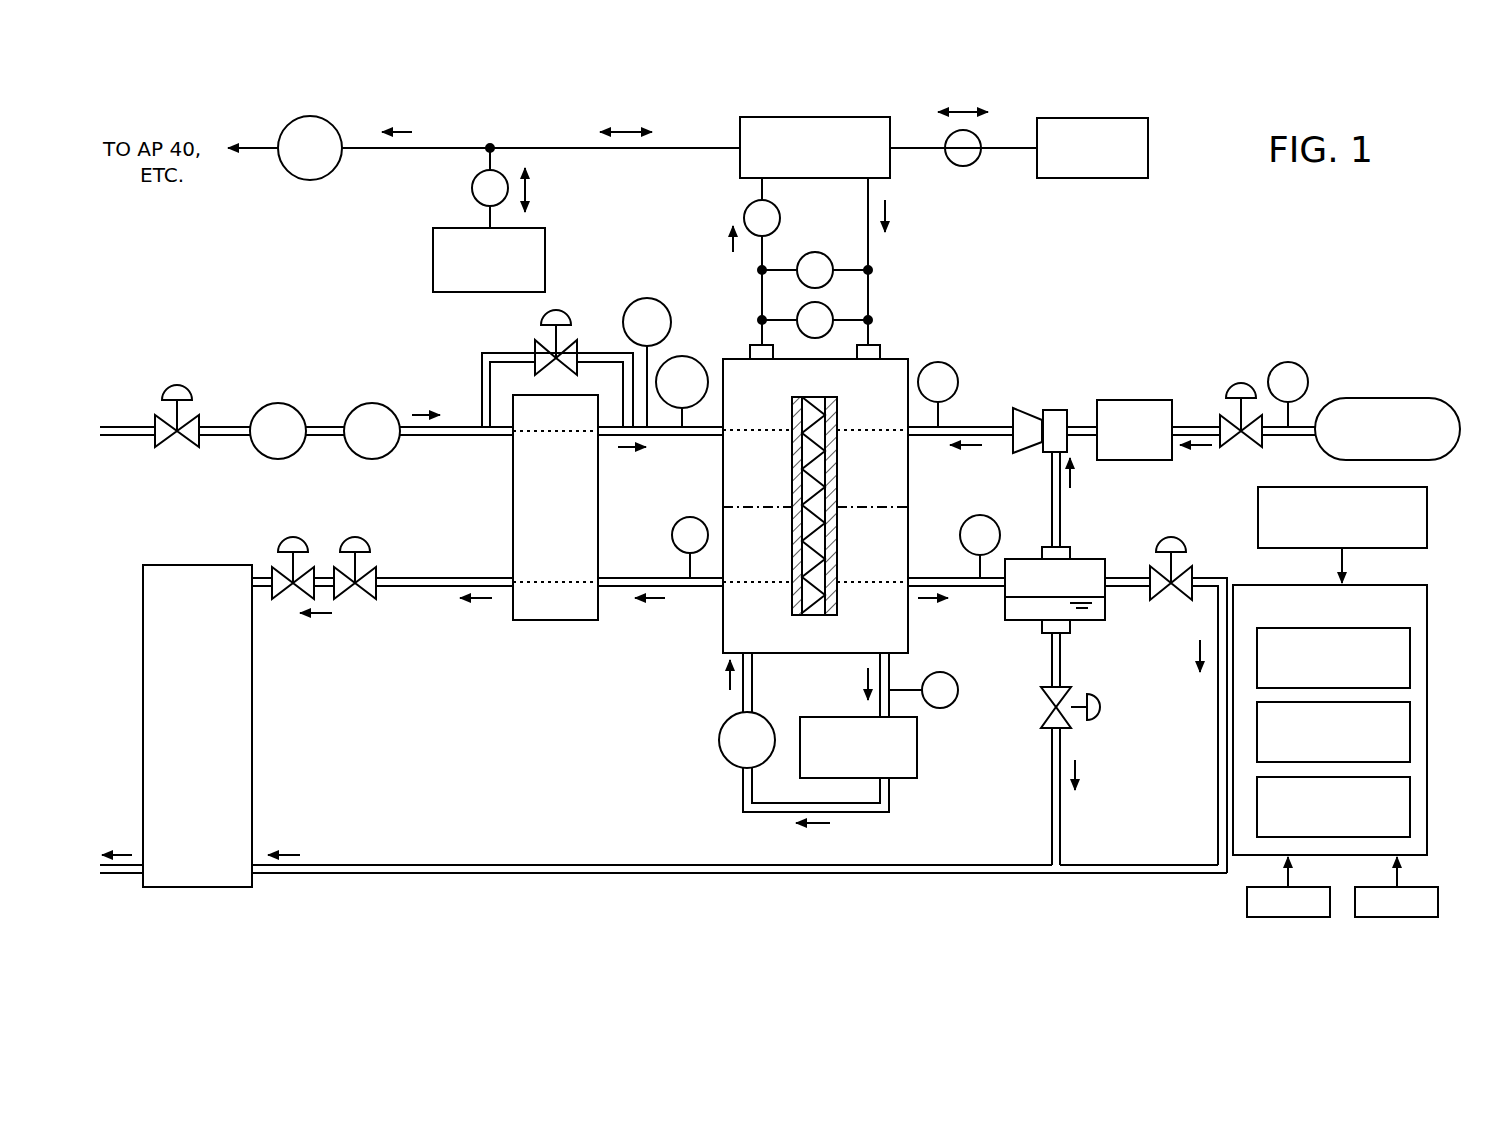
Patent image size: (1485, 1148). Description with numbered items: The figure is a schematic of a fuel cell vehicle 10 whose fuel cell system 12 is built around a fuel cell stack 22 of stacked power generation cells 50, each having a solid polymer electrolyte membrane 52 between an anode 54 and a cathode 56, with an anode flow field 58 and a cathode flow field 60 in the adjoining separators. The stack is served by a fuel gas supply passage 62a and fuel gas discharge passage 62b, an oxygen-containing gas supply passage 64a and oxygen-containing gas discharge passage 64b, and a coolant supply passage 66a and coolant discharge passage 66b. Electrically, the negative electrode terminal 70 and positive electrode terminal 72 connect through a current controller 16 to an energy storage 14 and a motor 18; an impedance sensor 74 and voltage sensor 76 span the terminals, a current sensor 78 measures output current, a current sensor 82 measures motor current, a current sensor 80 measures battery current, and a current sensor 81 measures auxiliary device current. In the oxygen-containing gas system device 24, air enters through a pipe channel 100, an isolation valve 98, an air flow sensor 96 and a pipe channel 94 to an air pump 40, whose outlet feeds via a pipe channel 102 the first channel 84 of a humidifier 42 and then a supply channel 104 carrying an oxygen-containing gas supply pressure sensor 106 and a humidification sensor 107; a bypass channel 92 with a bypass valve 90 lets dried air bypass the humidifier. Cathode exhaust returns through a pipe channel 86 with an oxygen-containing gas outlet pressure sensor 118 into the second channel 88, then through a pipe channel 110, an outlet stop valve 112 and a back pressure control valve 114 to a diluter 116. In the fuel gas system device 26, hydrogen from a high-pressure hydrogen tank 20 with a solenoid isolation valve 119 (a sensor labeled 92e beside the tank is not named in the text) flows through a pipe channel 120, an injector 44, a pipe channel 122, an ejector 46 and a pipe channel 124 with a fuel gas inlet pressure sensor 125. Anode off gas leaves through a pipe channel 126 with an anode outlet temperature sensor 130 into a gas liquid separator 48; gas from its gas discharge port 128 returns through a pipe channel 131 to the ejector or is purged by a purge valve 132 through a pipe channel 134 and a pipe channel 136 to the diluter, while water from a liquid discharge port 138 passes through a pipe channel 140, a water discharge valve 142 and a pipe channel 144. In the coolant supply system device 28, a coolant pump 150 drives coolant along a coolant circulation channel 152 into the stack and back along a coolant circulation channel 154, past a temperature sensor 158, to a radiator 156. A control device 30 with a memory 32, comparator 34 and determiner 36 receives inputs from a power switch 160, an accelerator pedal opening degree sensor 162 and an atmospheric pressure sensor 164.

The fuel cell vehicle 10 is at (237, 267).
The fuel cell system 12 is at (1216, 268).
The energy storage 14 is at (433, 252).
The current controller 16 is at (816, 117).
The motor 18 is at (1110, 118).
The high-pressure hydrogen tank 20 is at (1376, 398).
The fuel cell stack 22 is at (723, 497).
The oxygen-containing gas system device 24 is at (318, 336).
The fuel gas system device 26 is at (1325, 342).
The coolant supply system device 28 is at (692, 797).
The control device 30 is at (1288, 584).
The memory 32 is at (1412, 659).
The comparator 34 is at (1412, 733).
The determiner 36 is at (1412, 808).
The air pump 40 is at (373, 403).
The humidifier 42 is at (513, 512).
The injector 44 is at (1134, 400).
The ejector 46 is at (1025, 408).
The gas liquid separator 48 is at (1025, 621).
The power generation cell 50 is at (788, 396).
The solid polymer electrolyte membrane 52 is at (813, 492).
The anode 54 is at (833, 413).
The cathode 56 is at (798, 533).
The anode flow field 58 is at (839, 453).
The cathode flow field 60 is at (792, 455).
The fuel gas supply passage 62a is at (912, 438).
The fuel gas discharge passage 62b is at (907, 580).
The oxygen-containing gas supply passage 64a is at (723, 437).
The oxygen-containing gas discharge passage 64b is at (720, 589).
The coolant supply passage 66a is at (753, 655).
The coolant discharge passage 66b is at (893, 658).
The negative electrode terminal 70 is at (880, 346).
The positive electrode terminal 72 is at (750, 346).
The impedance sensor 74 is at (833, 317).
The voltage sensor 76 is at (826, 253).
The current sensor 78 is at (744, 218).
The current sensor 80 is at (471, 188).
The current sensor 81 is at (312, 181).
The current sensor 82 is at (966, 166).
The first channel 84 is at (531, 432).
The pipe channel 86 is at (628, 590).
The second channel 88 is at (530, 580).
The bypass valve 90 is at (542, 321).
The bypass channel 92 is at (482, 350).
The tank pressure sensor 92e is at (1288, 362).
The pipe channel 94 is at (333, 438).
The air flow sensor 96 is at (280, 403).
The isolation valve 98 is at (177, 385).
The pipe channel 100 is at (125, 437).
The pipe channel 102 is at (418, 438).
The supply channel 104 is at (632, 438).
The oxygen-containing gas supply pressure sensor 106 is at (684, 356).
The humidification sensor 107 is at (630, 305).
The pipe channel 110 is at (431, 590).
The outlet stop valve 112 is at (350, 537).
The back pressure control valve 114 is at (284, 537).
The diluter 116 is at (253, 726).
The oxygen-containing gas outlet pressure sensor 118 is at (674, 524).
The solenoid isolation valve 119 is at (1234, 383).
The pipe channel 120 is at (1200, 427).
The pipe channel 122 is at (1078, 427).
The pipe channel 124 is at (985, 427).
The fuel gas inlet pressure sensor 125 is at (942, 362).
The pipe channel 126 is at (972, 588).
The gas discharge port 128 is at (1068, 548).
The anode outlet temperature sensor 130 is at (986, 515).
The pipe channel 131 is at (1062, 506).
The purge valve 132 is at (1172, 537).
The pipe channel 134 is at (1217, 762).
The pipe channel 136 is at (414, 865).
The liquid discharge port 138 is at (1068, 628).
The pipe channel 140 is at (1062, 685).
The water discharge valve 142 is at (1103, 707).
The pipe channel 144 is at (1062, 819).
The coolant pump 150 is at (719, 740).
The coolant circulation channel 152 is at (743, 690).
The coolant circulation channel 154 is at (880, 706).
The radiator 156 is at (915, 775).
The temperature sensor 158 is at (951, 705).
The power switch 160 is at (1258, 520).
The accelerator pedal opening degree sensor 162 is at (1247, 902).
The atmospheric pressure sensor 164 is at (1405, 887).